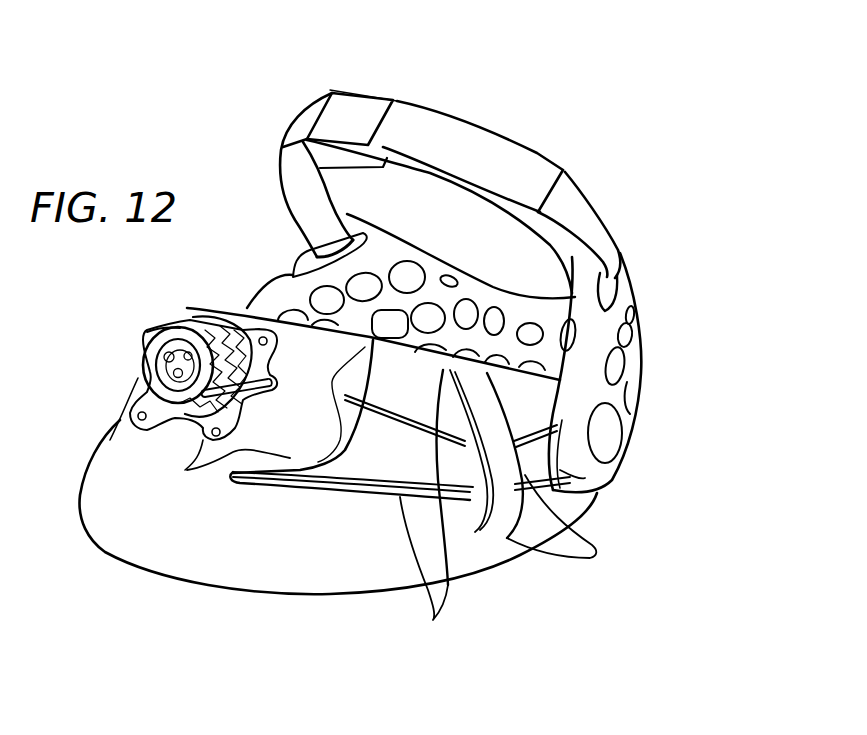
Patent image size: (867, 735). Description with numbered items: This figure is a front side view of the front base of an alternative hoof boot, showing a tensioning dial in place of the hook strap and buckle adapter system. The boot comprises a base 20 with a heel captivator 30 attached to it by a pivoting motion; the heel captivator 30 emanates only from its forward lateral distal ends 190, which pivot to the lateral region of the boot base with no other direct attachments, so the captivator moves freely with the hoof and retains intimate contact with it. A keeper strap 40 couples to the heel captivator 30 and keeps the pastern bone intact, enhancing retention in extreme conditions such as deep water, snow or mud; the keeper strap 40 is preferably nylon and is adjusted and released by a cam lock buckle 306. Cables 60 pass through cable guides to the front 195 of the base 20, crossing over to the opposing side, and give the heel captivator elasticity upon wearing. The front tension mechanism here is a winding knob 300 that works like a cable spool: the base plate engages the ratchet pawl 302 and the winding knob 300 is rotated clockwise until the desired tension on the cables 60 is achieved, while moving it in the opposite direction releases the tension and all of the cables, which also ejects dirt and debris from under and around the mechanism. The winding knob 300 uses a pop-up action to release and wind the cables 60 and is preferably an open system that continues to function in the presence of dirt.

The base 20 is at (143, 569).
The heel captivator 30 is at (640, 378).
The keeper strap 40 is at (492, 145).
The cables 60 is at (429, 508).
The forward lateral distal ends 190 is at (580, 474).
The front 195 is at (262, 545).
The winding knob 300 is at (167, 353).
The ratchet pawl 302 is at (145, 390).
The cam lock buckle 306 is at (360, 110).